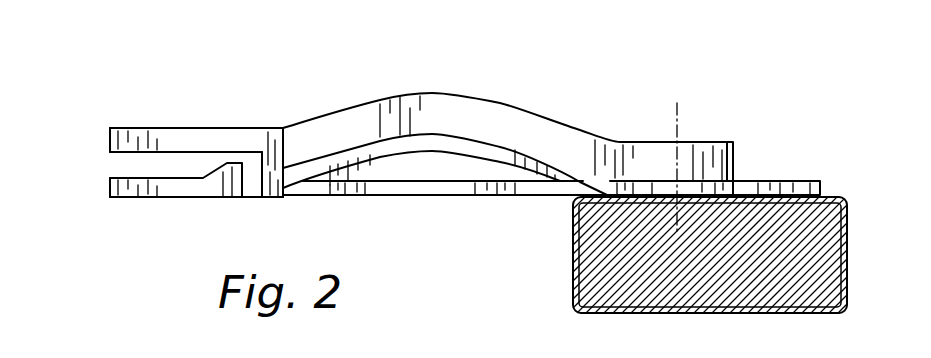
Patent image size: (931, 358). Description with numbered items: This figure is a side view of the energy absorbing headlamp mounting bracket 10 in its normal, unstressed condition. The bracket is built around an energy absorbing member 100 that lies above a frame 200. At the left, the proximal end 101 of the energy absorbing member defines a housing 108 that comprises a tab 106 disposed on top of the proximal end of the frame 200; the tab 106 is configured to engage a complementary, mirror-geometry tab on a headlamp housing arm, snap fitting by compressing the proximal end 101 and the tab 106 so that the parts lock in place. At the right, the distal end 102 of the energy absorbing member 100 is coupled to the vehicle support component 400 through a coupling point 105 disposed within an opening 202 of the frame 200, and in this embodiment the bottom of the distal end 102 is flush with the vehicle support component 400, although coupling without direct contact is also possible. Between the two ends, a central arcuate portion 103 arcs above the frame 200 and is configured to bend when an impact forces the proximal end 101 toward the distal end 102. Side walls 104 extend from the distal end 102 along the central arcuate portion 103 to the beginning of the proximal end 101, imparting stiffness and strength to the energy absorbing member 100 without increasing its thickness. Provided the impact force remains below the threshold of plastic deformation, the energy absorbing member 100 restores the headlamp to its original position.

The connector 10 is at (258, 87).
The energy absorbing member 100 is at (383, 150).
The proximal end 101 is at (173, 135).
The distal end 102 is at (727, 150).
The central arcuate portion 103 is at (425, 143).
The side walls 104 is at (453, 118).
The coupling point 105 is at (680, 118).
The tab 106 is at (195, 197).
The housing 108 is at (105, 117).
The frame 200 is at (447, 183).
The opening 202 is at (743, 190).
The vehicle support component 400 is at (573, 262).